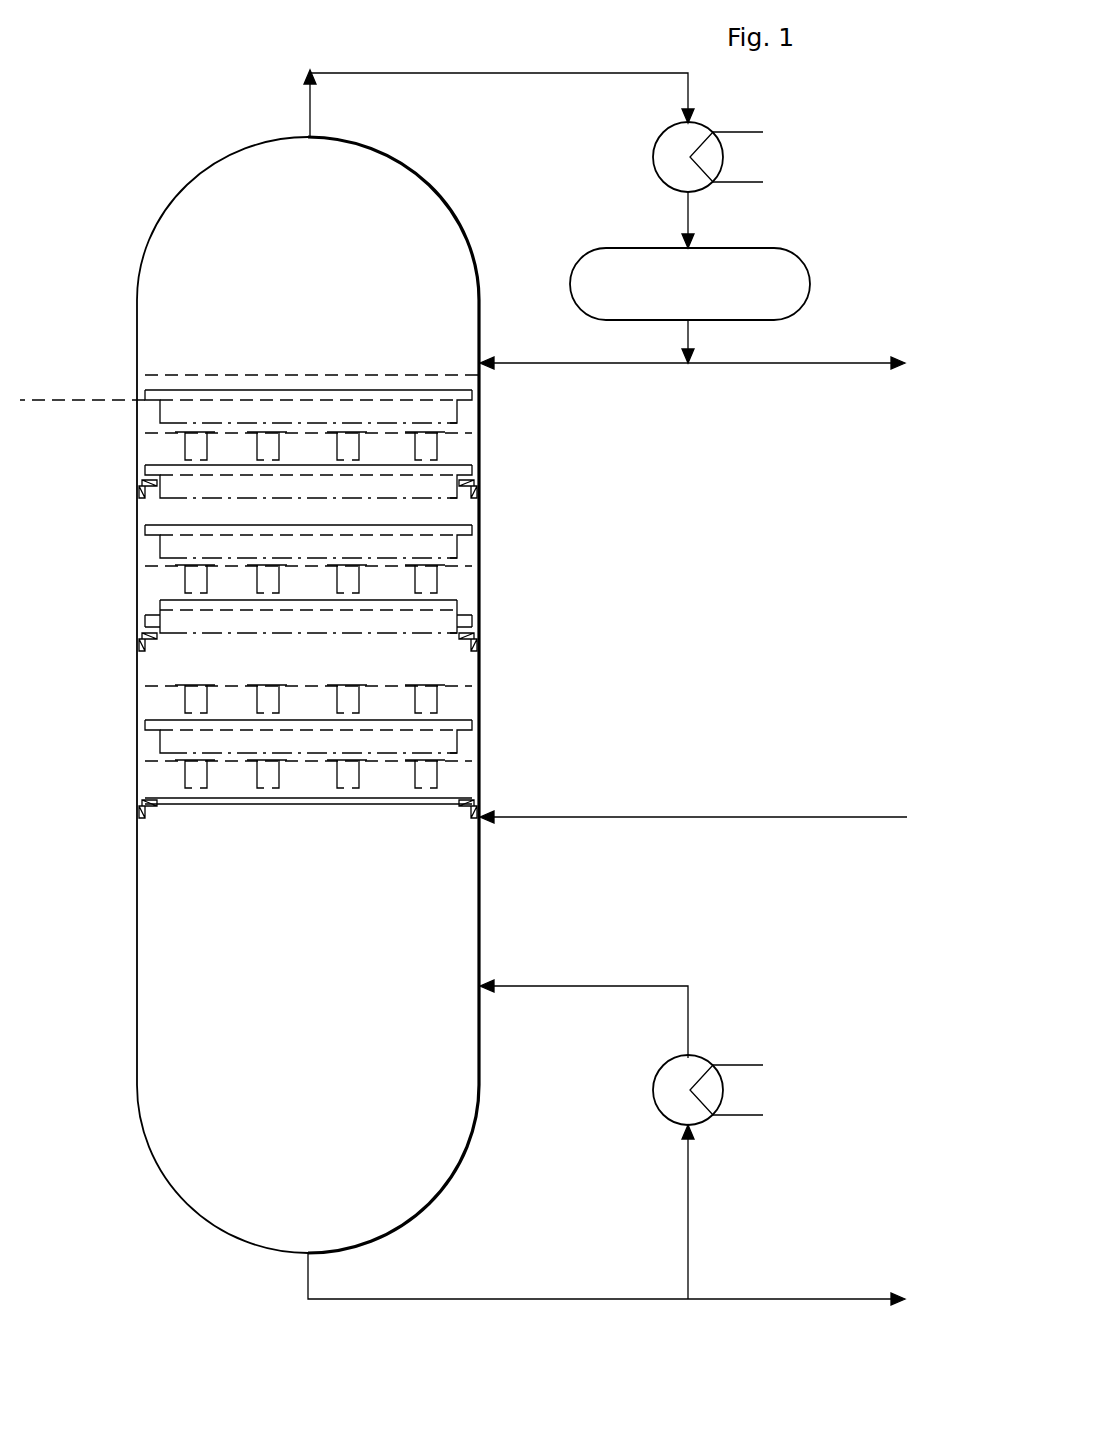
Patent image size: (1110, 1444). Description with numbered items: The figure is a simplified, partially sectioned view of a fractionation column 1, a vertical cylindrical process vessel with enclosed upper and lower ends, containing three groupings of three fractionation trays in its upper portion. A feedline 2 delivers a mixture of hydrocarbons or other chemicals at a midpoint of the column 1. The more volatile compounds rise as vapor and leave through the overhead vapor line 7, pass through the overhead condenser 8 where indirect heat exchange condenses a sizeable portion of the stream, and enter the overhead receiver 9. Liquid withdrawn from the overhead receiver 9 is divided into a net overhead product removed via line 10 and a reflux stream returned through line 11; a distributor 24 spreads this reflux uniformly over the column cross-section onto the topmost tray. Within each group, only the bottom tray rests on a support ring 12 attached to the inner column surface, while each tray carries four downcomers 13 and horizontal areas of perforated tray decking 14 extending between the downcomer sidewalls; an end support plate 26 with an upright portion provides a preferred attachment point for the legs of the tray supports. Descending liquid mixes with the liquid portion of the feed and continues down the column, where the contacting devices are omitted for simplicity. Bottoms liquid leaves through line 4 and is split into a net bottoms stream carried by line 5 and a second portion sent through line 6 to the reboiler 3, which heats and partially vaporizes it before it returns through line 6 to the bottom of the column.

The fractionation column 1 is at (486, 920).
The feedline 2 is at (650, 816).
The reboiler 3 is at (698, 1060).
The line 4 is at (452, 1299).
The line 5 is at (768, 1298).
The line 6 is at (562, 985).
The overhead vapor line 7 is at (310, 103).
The overhead condenser 8 is at (706, 128).
The overhead receiver 9 is at (741, 248).
The line 10 is at (752, 365).
The line 11 is at (560, 365).
The support ring 12 is at (140, 492).
The downcomers 13 is at (157, 475).
The perforated tray decking 14 is at (452, 476).
The distributor 24 is at (352, 372).
The end support plate 26 is at (145, 392).